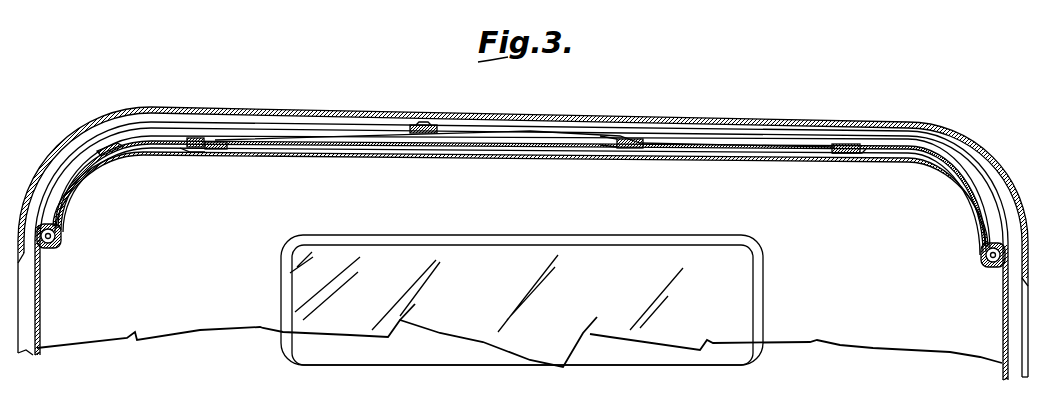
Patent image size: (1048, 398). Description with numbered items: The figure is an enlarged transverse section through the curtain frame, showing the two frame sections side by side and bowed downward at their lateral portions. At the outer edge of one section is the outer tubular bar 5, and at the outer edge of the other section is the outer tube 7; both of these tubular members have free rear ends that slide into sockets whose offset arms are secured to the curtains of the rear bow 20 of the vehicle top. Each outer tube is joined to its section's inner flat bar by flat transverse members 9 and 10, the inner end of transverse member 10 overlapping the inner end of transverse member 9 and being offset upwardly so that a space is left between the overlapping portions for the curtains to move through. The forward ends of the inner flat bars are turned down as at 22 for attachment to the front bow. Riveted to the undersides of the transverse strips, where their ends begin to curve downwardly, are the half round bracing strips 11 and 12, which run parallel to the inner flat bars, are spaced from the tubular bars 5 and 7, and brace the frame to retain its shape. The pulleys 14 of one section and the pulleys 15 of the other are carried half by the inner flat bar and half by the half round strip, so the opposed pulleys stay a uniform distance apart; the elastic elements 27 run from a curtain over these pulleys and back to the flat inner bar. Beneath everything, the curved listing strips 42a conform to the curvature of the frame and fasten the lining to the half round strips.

The outer longitudinally extending tubular bar 5 is at (63, 233).
The outer longitudinally extending tube 7 is at (983, 257).
The flat transverse member 9 is at (370, 138).
The flat transverse member 10 is at (533, 130).
The half round bracing strip 11 is at (203, 140).
The half round bracing strip 12 is at (857, 148).
The pulleys 14 is at (631, 150).
The pulleys 15 is at (857, 154).
The rear bow 20 is at (186, 152).
The turned down end 22 is at (322, 157).
The elastic elements 27 is at (273, 142).
The listing strips 42a is at (143, 158).